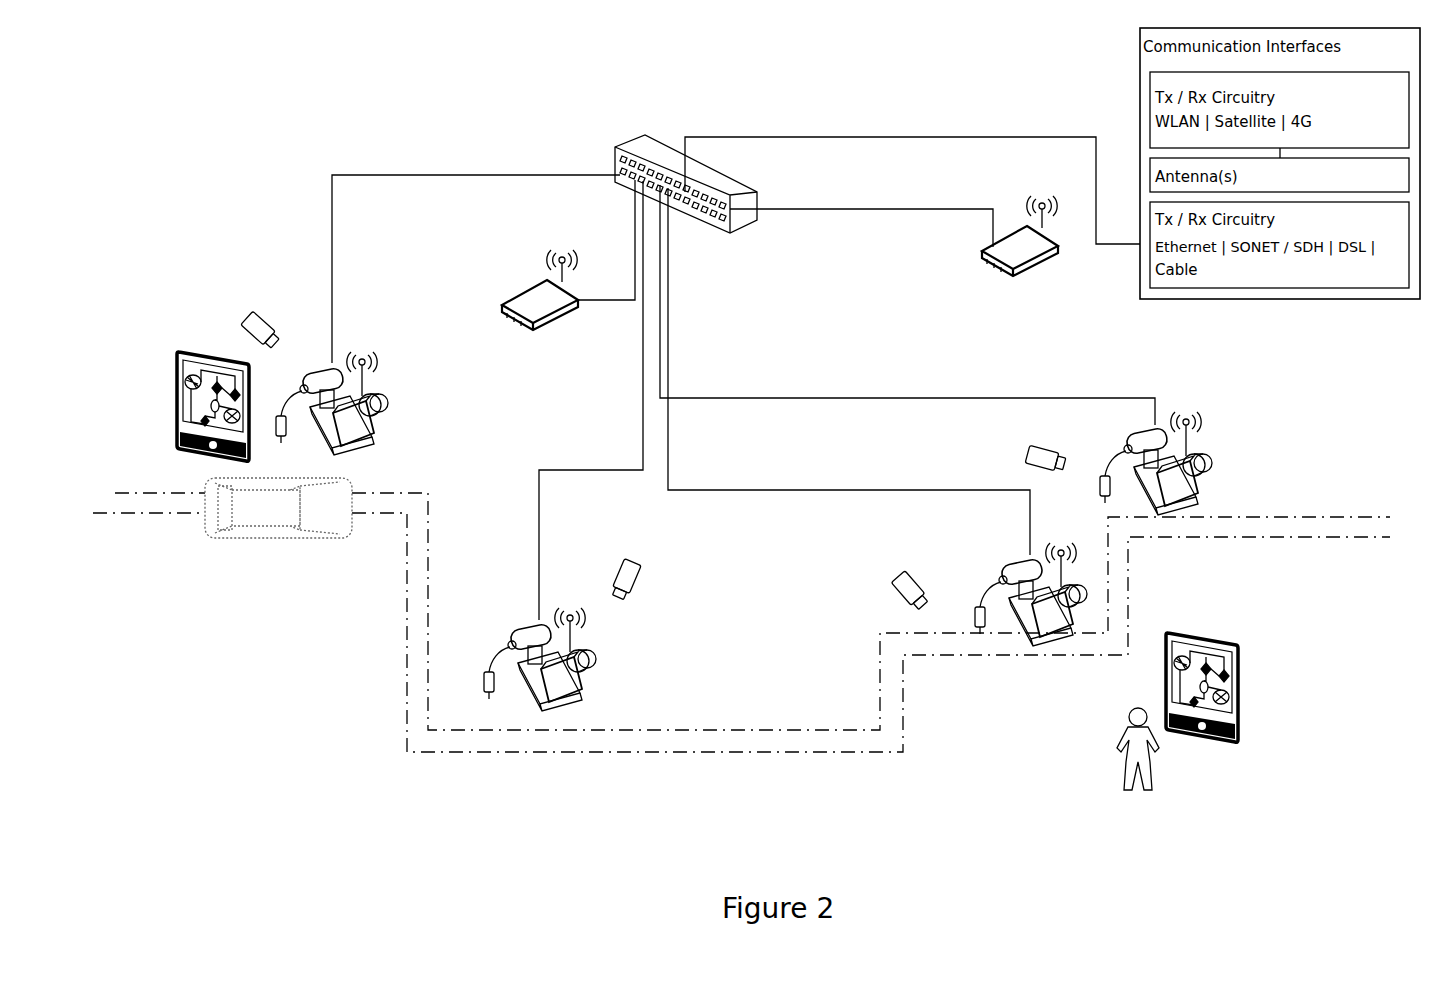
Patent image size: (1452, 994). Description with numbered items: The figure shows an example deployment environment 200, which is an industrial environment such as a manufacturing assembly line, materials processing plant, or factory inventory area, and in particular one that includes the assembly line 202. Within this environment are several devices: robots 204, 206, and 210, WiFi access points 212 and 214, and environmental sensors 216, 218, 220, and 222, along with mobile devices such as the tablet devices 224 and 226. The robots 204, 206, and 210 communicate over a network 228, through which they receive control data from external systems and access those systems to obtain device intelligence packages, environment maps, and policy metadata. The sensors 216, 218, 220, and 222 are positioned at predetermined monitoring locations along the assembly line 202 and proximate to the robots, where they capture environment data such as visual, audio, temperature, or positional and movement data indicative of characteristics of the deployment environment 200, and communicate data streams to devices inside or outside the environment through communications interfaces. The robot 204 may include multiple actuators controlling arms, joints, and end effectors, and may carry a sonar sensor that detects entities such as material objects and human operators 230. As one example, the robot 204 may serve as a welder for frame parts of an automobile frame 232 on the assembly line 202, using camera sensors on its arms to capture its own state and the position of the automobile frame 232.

The deployment environment 200 is at (91, 83).
The assembly line 202 is at (645, 752).
The robot 204 is at (355, 448).
The robot 206 is at (588, 650).
The robot 210 is at (1131, 436).
The WiFi access point 212 is at (555, 325).
The WiFi access point 214 is at (1047, 265).
The environmental sensor 216 is at (265, 318).
The environmental sensor 218 is at (635, 568).
The environmental sensor 220 is at (908, 578).
The environmental sensor 222 is at (1034, 448).
The tablet device 224 is at (176, 388).
The tablet device 226 is at (1212, 742).
The network 228 is at (587, 158).
The human operator 230 is at (1151, 784).
The automobile frame 232 is at (320, 538).